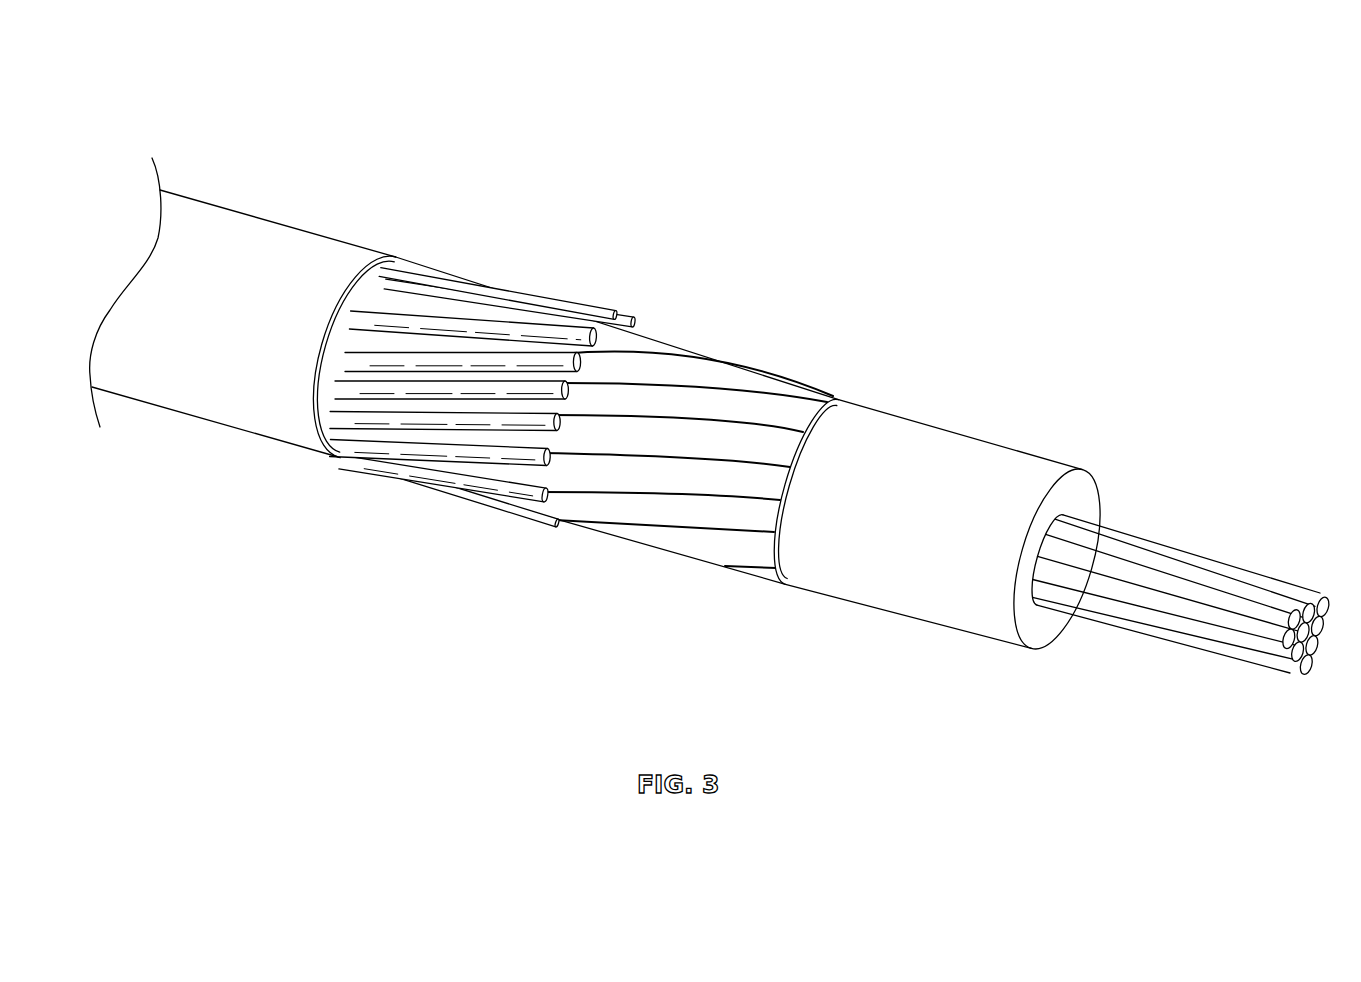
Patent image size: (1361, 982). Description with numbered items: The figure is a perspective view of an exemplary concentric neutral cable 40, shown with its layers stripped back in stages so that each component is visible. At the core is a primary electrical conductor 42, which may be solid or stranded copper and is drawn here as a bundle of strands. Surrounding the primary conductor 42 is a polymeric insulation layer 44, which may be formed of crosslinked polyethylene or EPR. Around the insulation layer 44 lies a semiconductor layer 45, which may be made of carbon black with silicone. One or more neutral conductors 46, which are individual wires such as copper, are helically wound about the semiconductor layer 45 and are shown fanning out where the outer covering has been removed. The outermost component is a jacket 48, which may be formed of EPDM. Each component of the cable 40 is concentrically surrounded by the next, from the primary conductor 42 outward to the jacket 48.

The cable 40 is at (710, 380).
The primary electrical conductor 42 is at (1160, 590).
The polymeric insulation layer 44 is at (940, 447).
The semiconductor layer 45 is at (740, 378).
The neutral conductors 46 is at (470, 357).
The jacket 48 is at (223, 222).